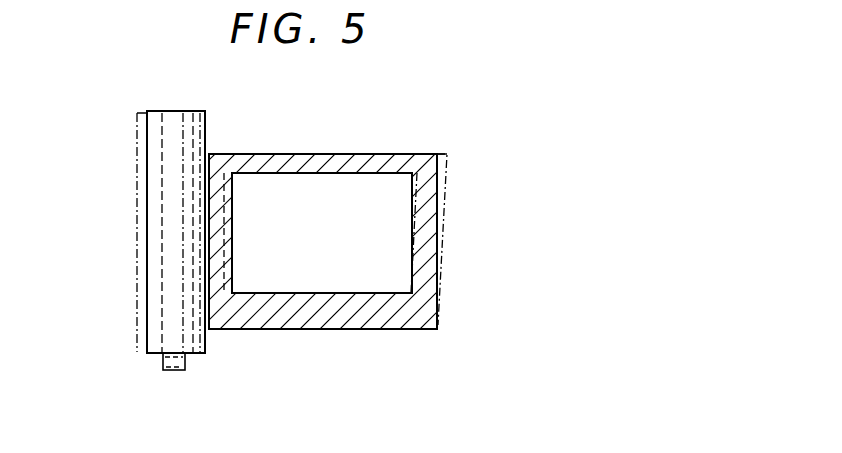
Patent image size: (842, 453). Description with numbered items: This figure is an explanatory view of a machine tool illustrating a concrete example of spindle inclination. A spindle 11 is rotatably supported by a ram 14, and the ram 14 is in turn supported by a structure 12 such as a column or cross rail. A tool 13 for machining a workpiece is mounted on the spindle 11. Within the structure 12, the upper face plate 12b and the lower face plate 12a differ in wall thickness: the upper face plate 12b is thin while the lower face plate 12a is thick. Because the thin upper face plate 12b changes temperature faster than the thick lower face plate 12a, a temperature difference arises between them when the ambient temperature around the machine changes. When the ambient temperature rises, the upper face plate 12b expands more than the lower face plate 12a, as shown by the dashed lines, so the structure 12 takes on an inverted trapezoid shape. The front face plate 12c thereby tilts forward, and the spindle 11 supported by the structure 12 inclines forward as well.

The spindle 11 is at (147, 192).
The structure 12 is at (447, 169).
The lower face plate 12a is at (323, 329).
The upper face plate 12b is at (323, 154).
The front face plate 12c is at (225, 240).
The tool 13 is at (165, 363).
The ram 14 is at (148, 157).